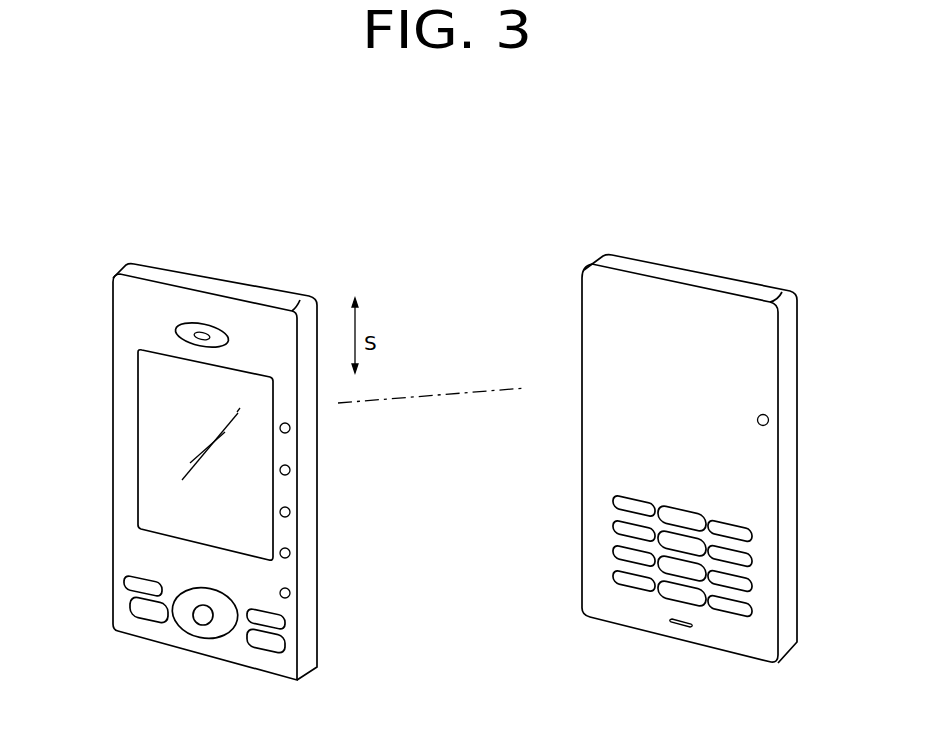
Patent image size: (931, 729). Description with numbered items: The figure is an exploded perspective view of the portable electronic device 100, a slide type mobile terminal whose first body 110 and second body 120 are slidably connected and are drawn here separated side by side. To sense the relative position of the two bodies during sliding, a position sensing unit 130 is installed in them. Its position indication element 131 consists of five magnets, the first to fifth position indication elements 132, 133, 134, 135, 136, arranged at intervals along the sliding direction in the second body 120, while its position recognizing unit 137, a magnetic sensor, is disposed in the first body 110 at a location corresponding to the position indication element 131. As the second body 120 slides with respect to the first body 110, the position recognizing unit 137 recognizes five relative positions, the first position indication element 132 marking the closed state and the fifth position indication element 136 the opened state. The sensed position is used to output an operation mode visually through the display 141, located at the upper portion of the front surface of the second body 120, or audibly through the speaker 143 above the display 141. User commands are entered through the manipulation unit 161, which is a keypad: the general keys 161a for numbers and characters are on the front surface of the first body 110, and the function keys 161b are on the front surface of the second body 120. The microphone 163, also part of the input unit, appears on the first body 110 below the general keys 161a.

The portable electronic device 100 is at (100, 230).
The first body 110 is at (593, 318).
The second body 120 is at (122, 548).
The position sensing unit 130 is at (524, 513).
The position indication element 131 is at (357, 514).
The first position indication element 132 is at (290, 428).
The second position indication element 133 is at (290, 470).
The third position indication element 134 is at (290, 512).
The fourth position indication element 135 is at (290, 553).
The fifth position indication element 136 is at (330, 596).
The position recognizing unit 137 is at (757, 420).
The display 141 is at (147, 385).
The speaker 143 is at (175, 333).
The manipulation unit 161 is at (438, 597).
The general keys 161a is at (611, 490).
The function keys 161b is at (286, 607).
The microphone 163 is at (693, 625).